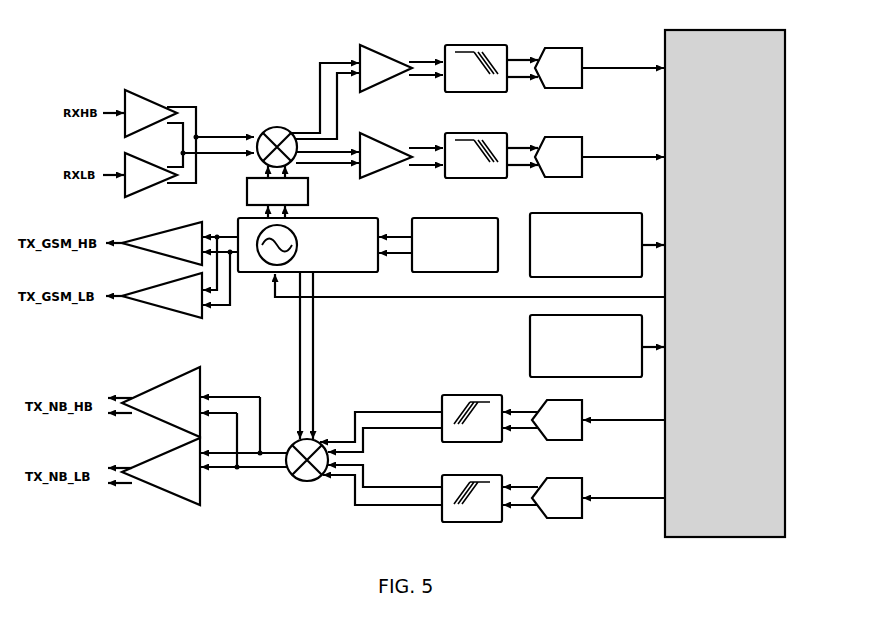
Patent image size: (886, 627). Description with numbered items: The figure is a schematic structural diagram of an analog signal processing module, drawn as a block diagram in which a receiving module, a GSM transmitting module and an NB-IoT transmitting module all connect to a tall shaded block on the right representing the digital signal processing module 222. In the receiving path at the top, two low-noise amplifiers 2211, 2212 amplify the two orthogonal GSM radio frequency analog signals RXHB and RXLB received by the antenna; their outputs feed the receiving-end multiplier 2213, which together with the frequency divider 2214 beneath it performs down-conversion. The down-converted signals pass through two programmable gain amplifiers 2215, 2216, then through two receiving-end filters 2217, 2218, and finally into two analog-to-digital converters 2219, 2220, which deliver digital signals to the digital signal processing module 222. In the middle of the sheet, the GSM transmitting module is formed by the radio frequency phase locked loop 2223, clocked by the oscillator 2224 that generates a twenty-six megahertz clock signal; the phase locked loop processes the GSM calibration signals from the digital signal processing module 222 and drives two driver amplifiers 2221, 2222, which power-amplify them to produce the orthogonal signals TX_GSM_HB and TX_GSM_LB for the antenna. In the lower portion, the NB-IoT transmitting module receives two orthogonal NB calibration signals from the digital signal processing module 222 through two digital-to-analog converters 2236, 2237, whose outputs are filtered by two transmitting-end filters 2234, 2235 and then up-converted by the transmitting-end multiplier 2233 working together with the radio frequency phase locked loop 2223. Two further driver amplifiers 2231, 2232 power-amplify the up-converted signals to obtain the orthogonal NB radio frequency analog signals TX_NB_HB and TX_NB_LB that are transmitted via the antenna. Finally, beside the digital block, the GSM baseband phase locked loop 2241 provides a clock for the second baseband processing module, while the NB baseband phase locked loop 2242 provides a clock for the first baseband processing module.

The digital signal processing module 222 is at (711, 29).
The low-noise amplifier 2211 is at (145, 96).
The low-noise amplifier 2212 is at (149, 188).
The receiving-end multiplier 2213 is at (258, 131).
The frequency divider 2214 is at (309, 196).
The programmable gain amplifier 2215 is at (376, 53).
The programmable gain amplifier 2216 is at (376, 141).
The receiving-end filter 2217 is at (463, 45).
The receiving-end filter 2218 is at (459, 133).
The analog-to-digital converter 2219 is at (548, 47).
The analog-to-digital converter 2220 is at (553, 136).
The driver amplifier 2221 is at (166, 230).
The driver amplifier 2222 is at (133, 292).
The radio frequency phase locked loop 2223 is at (346, 217).
The oscillator 2224 is at (425, 217).
The driver amplifier 2231 is at (145, 392).
The driver amplifier 2232 is at (143, 461).
The transmitting-end multiplier 2233 is at (285, 471).
The transmitting-end filter 2234 is at (450, 393).
The transmitting-end filter 2235 is at (448, 473).
The digital-to-analog converter 2236 is at (584, 402).
The digital-to-analog converter 2237 is at (585, 478).
The GSM baseband phase locked loop 2241 is at (570, 213).
The NB baseband phase locked loop 2242 is at (530, 326).